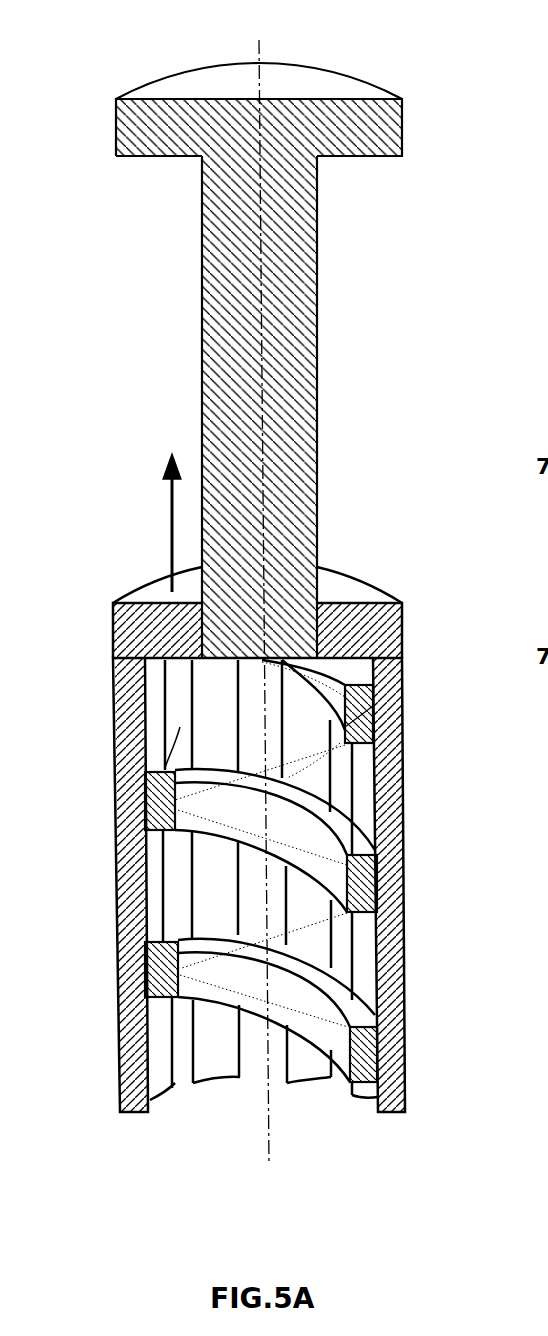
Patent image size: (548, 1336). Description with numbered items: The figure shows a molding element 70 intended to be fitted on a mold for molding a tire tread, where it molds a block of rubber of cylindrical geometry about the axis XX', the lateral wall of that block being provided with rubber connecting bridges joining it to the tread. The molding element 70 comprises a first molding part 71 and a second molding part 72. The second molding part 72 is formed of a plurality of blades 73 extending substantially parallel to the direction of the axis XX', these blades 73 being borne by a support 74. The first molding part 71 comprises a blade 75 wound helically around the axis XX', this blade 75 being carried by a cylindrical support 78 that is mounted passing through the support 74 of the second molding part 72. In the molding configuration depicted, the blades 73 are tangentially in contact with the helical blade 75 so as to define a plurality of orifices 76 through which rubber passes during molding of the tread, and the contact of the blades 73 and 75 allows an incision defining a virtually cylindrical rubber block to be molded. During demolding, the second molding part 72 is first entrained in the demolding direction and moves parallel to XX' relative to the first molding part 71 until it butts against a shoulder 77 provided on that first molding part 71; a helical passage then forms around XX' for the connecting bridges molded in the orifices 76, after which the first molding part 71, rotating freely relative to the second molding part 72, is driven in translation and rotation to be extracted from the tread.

The molding element 70 is at (295, 614).
The first molding part 71 is at (380, 703).
The second molding part 72 is at (403, 845).
The blades 73 is at (317, 1070).
The support 74 is at (397, 610).
The blade 75 is at (380, 916).
The orifices 76 is at (138, 808).
The shoulder 77 is at (547, 127).
The cylindrical support 78 is at (225, 322).